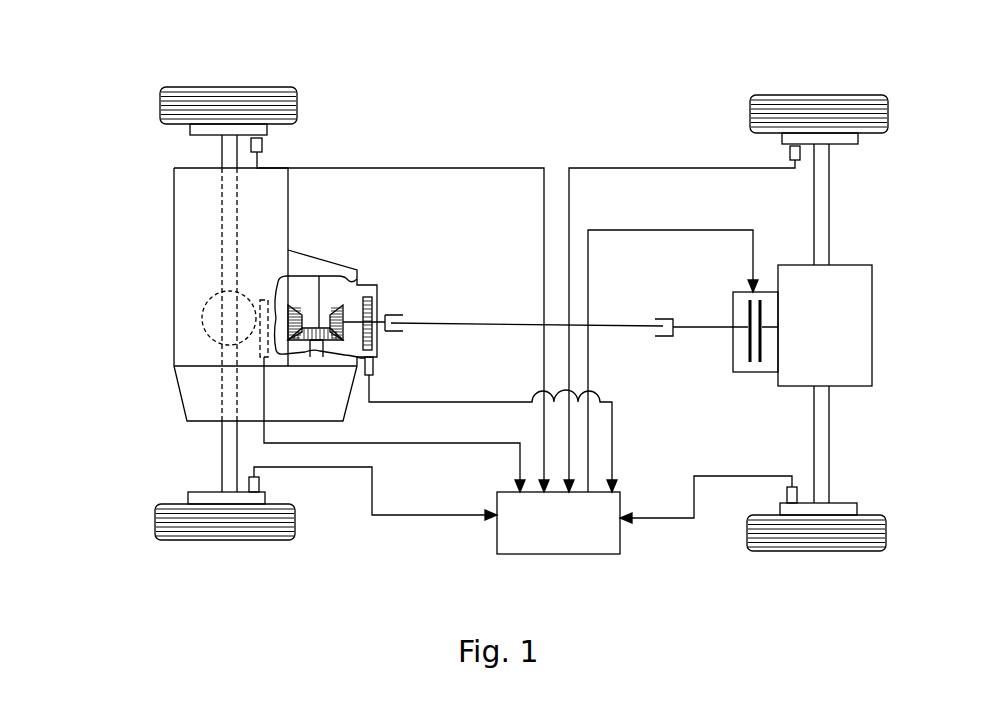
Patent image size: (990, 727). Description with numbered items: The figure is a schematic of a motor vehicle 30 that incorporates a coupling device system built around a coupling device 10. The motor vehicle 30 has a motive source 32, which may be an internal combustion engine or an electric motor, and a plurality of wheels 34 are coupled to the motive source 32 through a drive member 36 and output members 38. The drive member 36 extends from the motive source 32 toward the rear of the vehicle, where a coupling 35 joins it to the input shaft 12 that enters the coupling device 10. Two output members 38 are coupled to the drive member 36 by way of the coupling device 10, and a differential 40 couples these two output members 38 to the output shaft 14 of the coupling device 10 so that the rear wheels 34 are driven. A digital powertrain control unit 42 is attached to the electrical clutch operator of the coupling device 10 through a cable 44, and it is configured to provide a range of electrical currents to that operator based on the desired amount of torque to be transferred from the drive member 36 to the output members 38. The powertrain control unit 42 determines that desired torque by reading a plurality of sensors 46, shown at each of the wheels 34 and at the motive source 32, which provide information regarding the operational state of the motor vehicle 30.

The coupling device 10 is at (746, 380).
The input shaft 12 is at (706, 325).
The output shaft 14 is at (767, 330).
The motor vehicle 30 is at (515, 79).
The motive source 32 is at (176, 218).
The wheels 34 is at (297, 106).
The coupling 35 is at (665, 317).
The drive member 36 is at (497, 322).
The output members 38 is at (832, 207).
The differential 40 is at (874, 307).
The digital powertrain control unit (PCU) 42 is at (572, 534).
The cable 44 is at (691, 230).
The sensors 46 is at (262, 146).